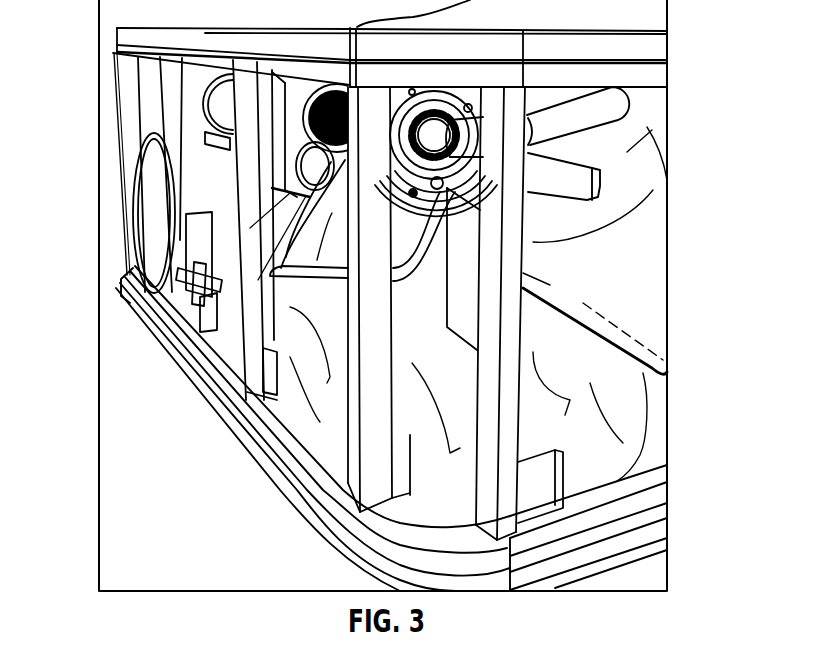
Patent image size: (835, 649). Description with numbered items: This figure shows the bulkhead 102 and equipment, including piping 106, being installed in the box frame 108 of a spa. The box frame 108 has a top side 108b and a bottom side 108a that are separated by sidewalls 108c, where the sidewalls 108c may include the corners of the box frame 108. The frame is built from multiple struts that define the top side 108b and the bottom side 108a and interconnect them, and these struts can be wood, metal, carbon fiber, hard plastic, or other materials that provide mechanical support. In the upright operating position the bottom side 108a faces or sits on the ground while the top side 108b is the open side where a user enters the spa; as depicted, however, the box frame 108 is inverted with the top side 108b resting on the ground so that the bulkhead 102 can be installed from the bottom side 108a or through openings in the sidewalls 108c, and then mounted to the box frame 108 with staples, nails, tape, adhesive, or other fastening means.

The bulkhead 102 is at (620, 423).
The piping 106 is at (597, 140).
The box frame 108 is at (112, 50).
The bottom side 108a is at (119, 36).
The top side 108b is at (285, 485).
The sidewalls 108c is at (115, 110).